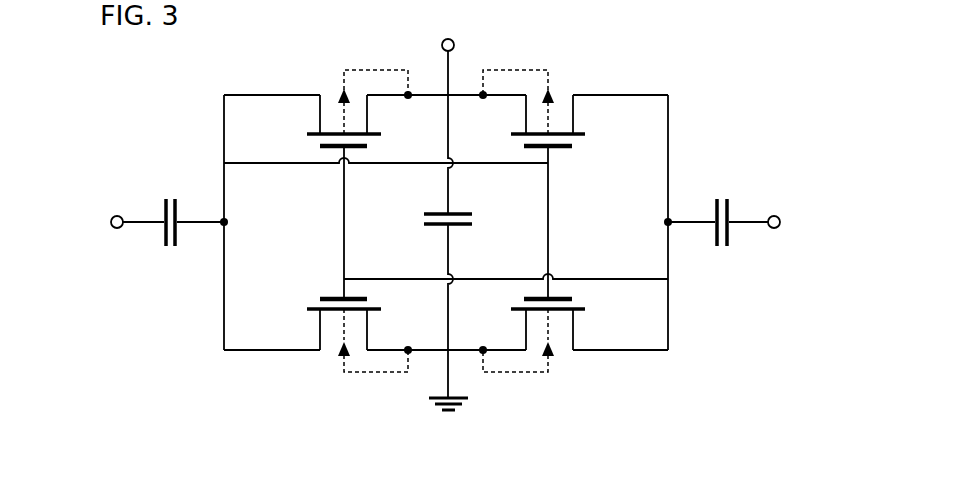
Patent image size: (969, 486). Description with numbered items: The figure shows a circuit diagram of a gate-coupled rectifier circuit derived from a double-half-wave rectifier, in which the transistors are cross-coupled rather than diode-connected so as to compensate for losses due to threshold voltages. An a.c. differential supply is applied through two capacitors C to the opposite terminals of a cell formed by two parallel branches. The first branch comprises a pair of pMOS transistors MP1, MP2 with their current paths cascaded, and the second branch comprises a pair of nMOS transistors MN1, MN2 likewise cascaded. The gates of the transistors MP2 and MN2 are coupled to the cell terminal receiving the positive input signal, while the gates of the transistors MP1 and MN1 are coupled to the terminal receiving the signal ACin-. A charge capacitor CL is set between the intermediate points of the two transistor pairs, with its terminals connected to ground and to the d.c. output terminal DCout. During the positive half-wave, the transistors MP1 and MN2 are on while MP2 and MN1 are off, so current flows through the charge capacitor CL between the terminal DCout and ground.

The pMOS transistor MP1 is at (332, 133).
The pMOS transistor MP2 is at (557, 133).
The nMOS transistor MN1 is at (352, 345).
The nMOS transistor MN2 is at (538, 344).
The capacitor C is at (164, 206).
The charge capacitor CL is at (464, 226).
The d.c. output terminal DCout is at (451, 211).
The a.c. differential supply signal ACin- is at (816, 223).